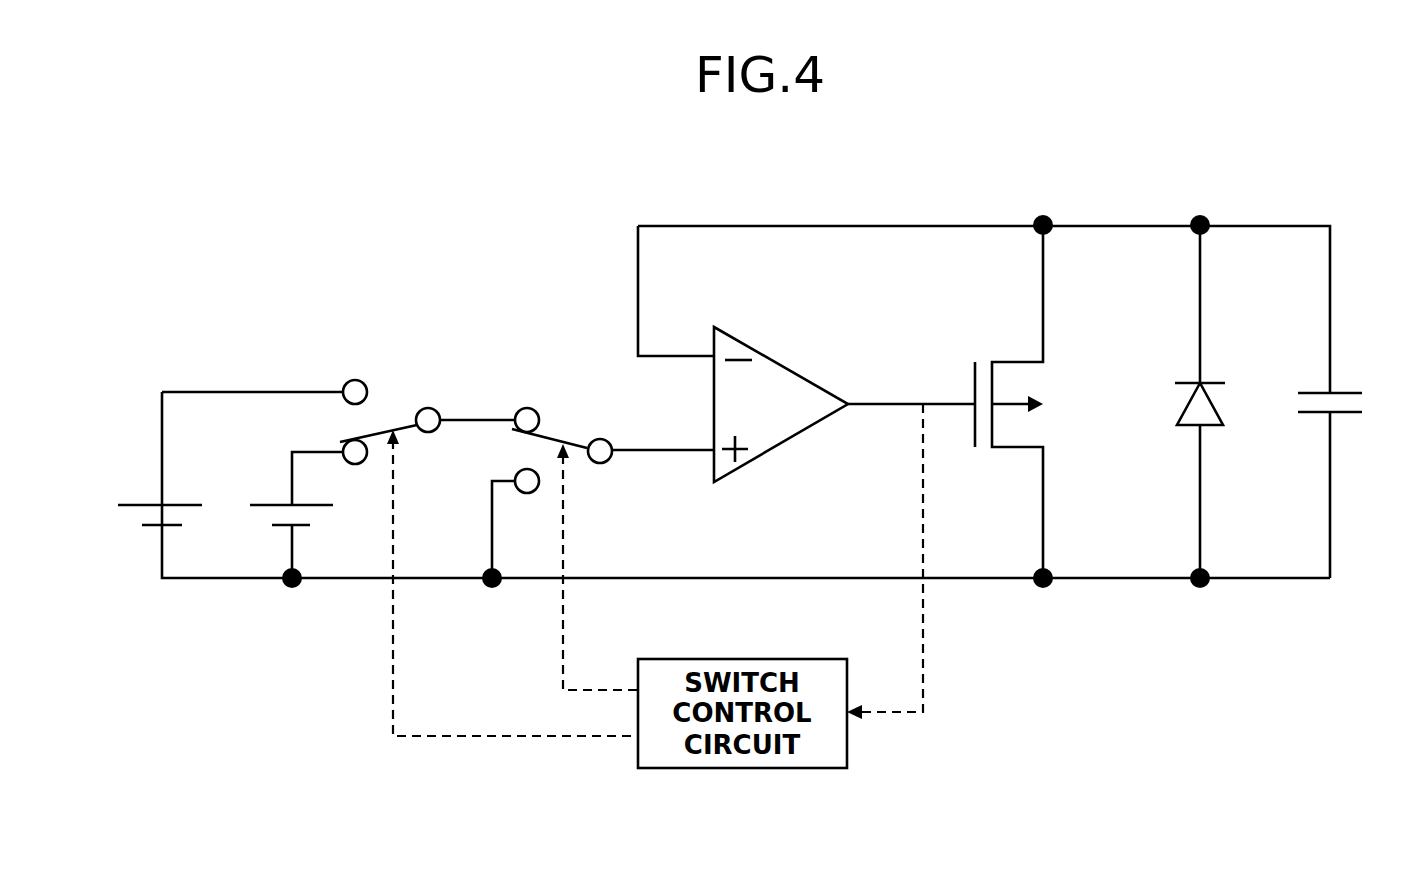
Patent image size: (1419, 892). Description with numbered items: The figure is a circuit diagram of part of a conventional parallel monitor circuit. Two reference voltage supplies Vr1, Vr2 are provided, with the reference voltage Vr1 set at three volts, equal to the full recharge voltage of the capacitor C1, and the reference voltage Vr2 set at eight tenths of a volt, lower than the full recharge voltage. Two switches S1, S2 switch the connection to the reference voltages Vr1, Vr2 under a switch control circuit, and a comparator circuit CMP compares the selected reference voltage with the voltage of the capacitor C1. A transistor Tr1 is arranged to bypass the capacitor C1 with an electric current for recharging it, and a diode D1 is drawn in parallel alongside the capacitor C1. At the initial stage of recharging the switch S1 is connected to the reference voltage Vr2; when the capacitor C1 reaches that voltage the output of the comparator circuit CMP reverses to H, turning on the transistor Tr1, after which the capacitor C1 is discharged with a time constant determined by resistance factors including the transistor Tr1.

The reference voltage supply Vr1 is at (153, 495).
The reference voltage supply Vr2 is at (289, 520).
The switch S1 is at (489, 554).
The switch S2 is at (560, 544).
The comparator circuit CMP is at (781, 404).
The transistor Tr1 is at (1008, 401).
The diode D1 is at (1224, 401).
The capacitor C1 is at (1353, 405).